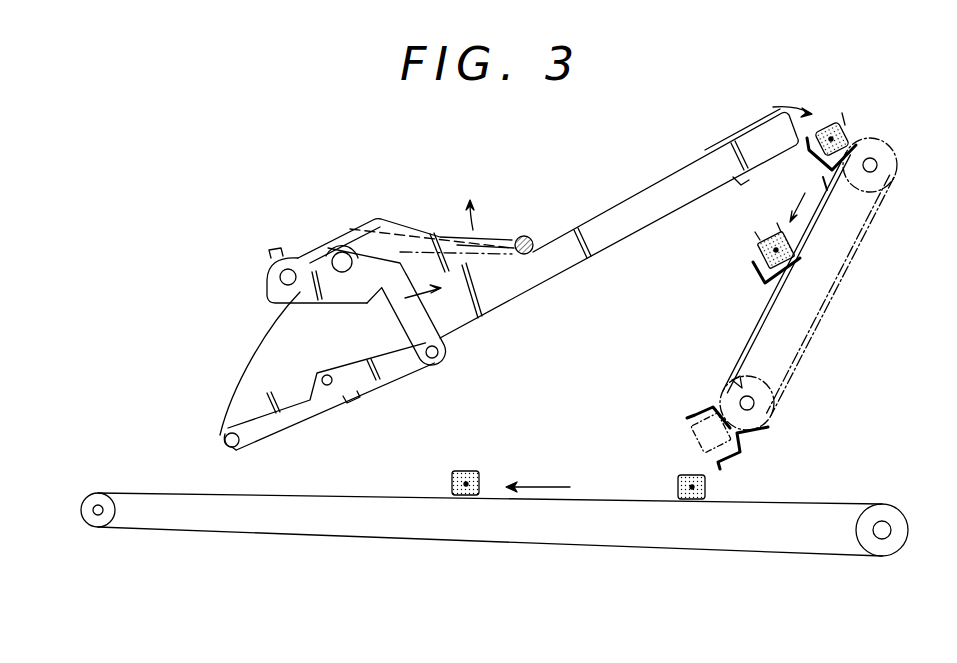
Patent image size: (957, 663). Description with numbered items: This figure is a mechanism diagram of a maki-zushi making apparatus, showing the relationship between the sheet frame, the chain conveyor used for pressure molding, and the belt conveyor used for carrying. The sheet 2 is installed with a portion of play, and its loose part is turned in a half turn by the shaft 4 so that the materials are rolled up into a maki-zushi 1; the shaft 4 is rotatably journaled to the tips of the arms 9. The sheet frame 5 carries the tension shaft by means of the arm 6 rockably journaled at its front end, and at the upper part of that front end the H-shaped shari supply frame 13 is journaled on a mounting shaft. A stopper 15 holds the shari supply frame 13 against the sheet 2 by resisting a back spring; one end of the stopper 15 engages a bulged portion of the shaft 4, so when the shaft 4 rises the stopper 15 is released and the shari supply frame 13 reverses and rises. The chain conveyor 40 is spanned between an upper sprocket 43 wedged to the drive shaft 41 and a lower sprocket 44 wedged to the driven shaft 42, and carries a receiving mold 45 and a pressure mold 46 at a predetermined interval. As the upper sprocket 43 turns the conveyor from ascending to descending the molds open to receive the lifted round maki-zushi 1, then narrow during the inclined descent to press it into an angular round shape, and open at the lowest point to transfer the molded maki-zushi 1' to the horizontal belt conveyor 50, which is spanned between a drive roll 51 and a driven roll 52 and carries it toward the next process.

The maki-zushi 1 is at (781, 151).
The angular round molded maki-zushi 1' is at (578, 461).
The sheet 2 is at (272, 338).
The shaft 4 is at (337, 245).
The sheet frame 5 is at (613, 237).
The arm 6 is at (258, 423).
The arms 9 is at (440, 332).
The shari supply frame 13 is at (495, 243).
The stopper 15 is at (276, 297).
The chain conveyor 40 is at (840, 290).
The drive shaft 41 is at (874, 168).
The driven shaft 42 is at (754, 403).
The upper sprocket 43 is at (883, 158).
The lower sprocket 44 is at (740, 387).
The receiving mold 45 is at (810, 162).
The pressure mold 46 is at (847, 133).
The belt conveyor 50 is at (410, 540).
The drive roll 51 is at (880, 540).
The driven roll 52 is at (98, 522).